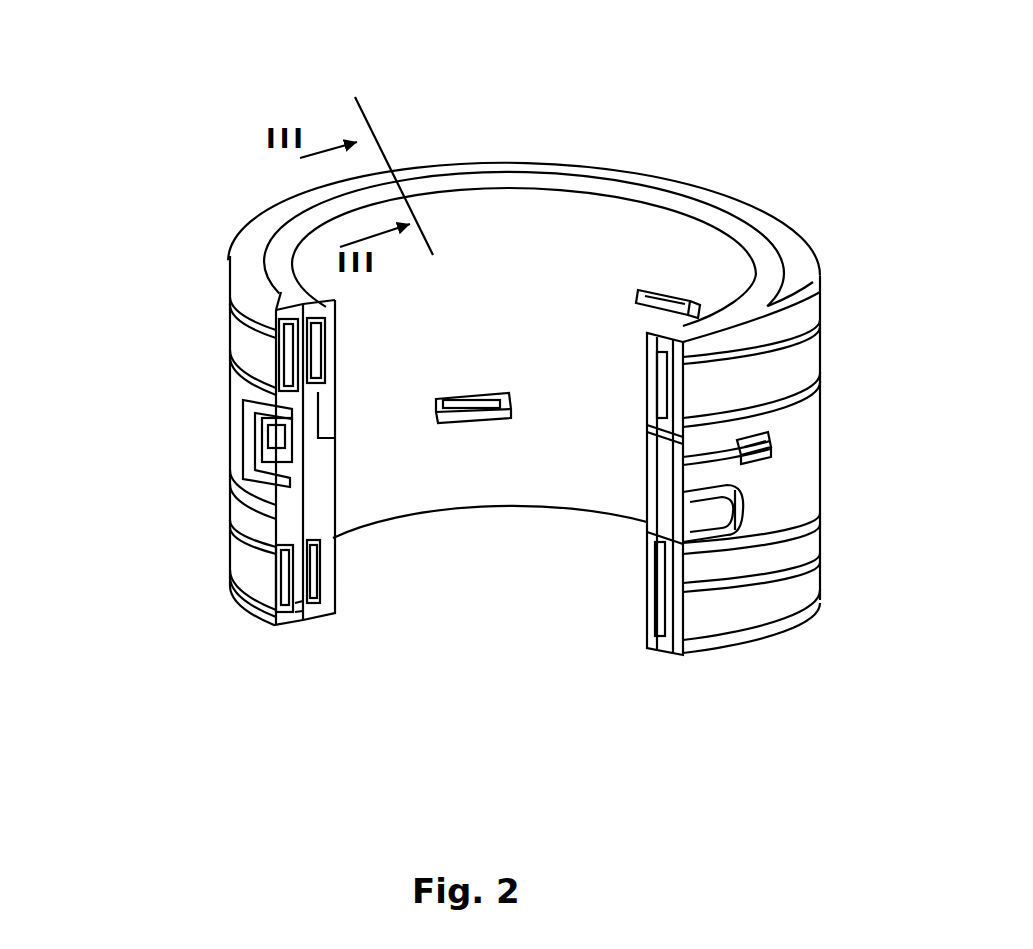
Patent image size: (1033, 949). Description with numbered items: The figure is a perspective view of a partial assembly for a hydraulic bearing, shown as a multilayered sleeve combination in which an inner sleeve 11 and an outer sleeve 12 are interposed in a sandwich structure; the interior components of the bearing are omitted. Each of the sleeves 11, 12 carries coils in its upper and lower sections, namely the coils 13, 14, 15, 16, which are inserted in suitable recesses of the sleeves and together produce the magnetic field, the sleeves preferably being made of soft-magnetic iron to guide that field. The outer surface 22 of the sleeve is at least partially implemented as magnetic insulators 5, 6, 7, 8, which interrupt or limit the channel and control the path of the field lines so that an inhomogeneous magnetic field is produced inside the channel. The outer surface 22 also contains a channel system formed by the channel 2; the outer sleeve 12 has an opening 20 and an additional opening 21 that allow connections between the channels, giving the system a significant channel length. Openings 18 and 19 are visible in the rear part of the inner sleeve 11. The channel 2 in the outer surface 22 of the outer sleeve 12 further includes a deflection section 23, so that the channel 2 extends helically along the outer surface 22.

The channel 2 is at (324, 448).
The magnetic insulator 5 is at (318, 392).
The magnetic insulator 6 is at (288, 552).
The magnetic insulator 7 is at (334, 391).
The magnetic insulator 8 is at (329, 539).
The inner sleeve 11 is at (283, 249).
The outer sleeve 12 is at (241, 247).
The coil 13 is at (240, 337).
The coil 14 is at (253, 560).
The coil 15 is at (645, 383).
The coil 16 is at (645, 593).
The opening 18 is at (668, 296).
The opening 19 is at (482, 393).
The opening 20 is at (758, 435).
The additional opening 21 is at (230, 472).
The outer surface 22 is at (772, 484).
The deflection section 23 is at (730, 540).